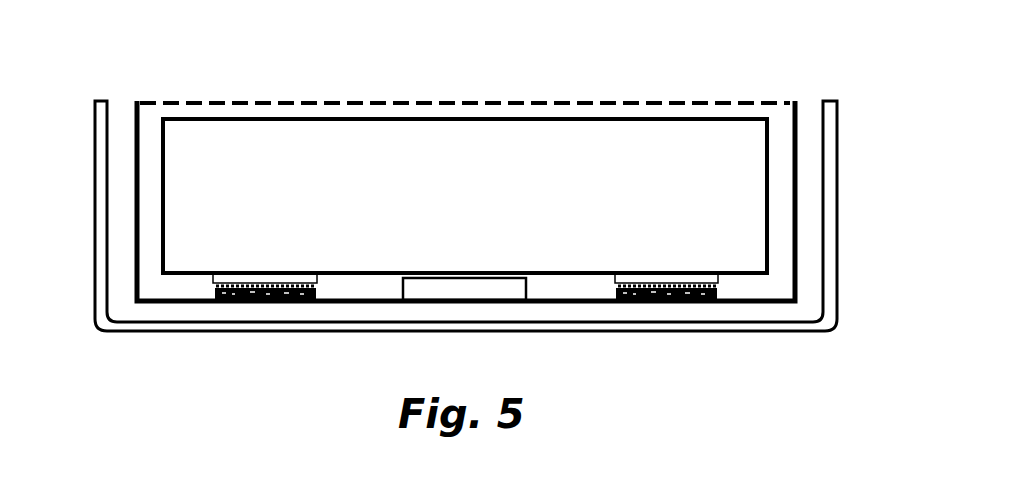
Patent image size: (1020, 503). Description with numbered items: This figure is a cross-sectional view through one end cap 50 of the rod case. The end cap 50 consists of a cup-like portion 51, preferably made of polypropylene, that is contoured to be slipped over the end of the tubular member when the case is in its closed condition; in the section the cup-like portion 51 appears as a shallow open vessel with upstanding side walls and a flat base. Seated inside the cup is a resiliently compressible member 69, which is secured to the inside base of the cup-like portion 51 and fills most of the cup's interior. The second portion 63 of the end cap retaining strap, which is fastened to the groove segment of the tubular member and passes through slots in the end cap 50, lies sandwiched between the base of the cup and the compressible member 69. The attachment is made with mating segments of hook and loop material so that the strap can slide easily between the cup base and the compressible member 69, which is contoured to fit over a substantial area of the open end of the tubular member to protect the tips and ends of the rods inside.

The end cap 50 is at (851, 142).
The cup-like portion 51 is at (120, 153).
The second portion of the retaining strap 63 is at (413, 292).
The resiliently compressible member 69 is at (505, 158).